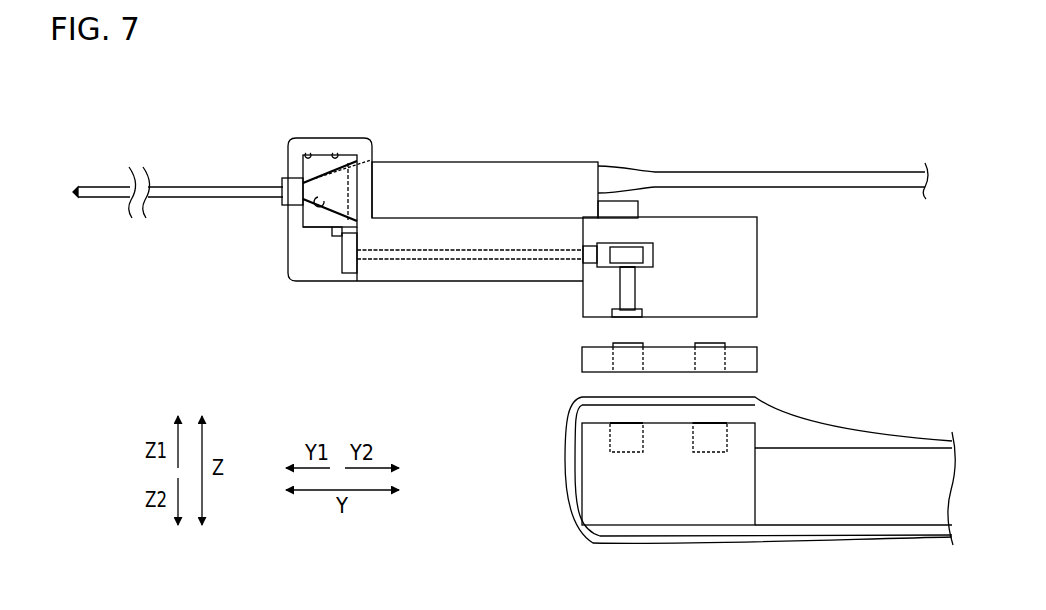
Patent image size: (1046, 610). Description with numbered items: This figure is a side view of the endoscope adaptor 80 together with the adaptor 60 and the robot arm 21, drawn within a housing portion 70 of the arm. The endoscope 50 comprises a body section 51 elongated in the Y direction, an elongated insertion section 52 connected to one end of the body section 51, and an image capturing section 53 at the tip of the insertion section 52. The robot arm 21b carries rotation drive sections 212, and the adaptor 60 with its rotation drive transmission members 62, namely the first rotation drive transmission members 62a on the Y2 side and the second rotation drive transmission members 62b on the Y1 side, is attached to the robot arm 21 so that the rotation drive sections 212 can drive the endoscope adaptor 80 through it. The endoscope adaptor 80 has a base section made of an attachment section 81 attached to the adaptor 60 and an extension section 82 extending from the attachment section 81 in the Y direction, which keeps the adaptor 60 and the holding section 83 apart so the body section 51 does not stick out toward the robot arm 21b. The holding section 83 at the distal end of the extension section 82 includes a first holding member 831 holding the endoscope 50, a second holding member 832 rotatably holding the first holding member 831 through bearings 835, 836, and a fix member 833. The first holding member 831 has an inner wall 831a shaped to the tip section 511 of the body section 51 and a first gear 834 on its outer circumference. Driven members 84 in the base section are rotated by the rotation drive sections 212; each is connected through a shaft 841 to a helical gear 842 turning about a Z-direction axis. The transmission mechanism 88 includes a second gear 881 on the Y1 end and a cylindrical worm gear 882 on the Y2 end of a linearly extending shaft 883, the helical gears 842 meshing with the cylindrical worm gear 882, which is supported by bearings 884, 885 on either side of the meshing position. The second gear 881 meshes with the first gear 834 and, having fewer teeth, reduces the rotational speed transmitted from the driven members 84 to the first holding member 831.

The robot arm 21 is at (767, 508).
The robot arm 21b is at (823, 505).
The rotation drive section 212 is at (708, 453).
The endoscope 50 is at (650, 167).
The body section 51 is at (465, 165).
The tip section 511 is at (373, 161).
The insertion section 52 is at (196, 193).
The image capturing section 53 is at (74, 188).
The adaptor 60 is at (692, 341).
The rotation drive transmission member 62 is at (692, 341).
The first rotation drive transmission member 62a is at (613, 344).
The second rotation drive transmission member 62b is at (720, 343).
The housing 70 is at (760, 495).
The endoscope adaptor 80 is at (685, 256).
The attachment section 81 is at (757, 280).
The extension section 82 is at (399, 283).
The holding section 83 is at (316, 219).
The first holding member 831 is at (303, 167).
The inner wall 831a is at (290, 248).
The second holding member 832 is at (322, 139).
The fix member 833 is at (290, 178).
The first gear 834 is at (357, 235).
The bearing 835 is at (305, 229).
The bearing 836 is at (336, 238).
The driven member 84 is at (641, 311).
The shaft 841 is at (637, 288).
The helical gear 842 is at (638, 272).
The transmission mechanism 88 is at (457, 299).
The second gear 881 is at (351, 275).
The cylindrical worm gear 882 is at (628, 243).
The shaft 883 is at (460, 262).
The bearing 884 is at (583, 265).
The bearing 885 is at (650, 246).